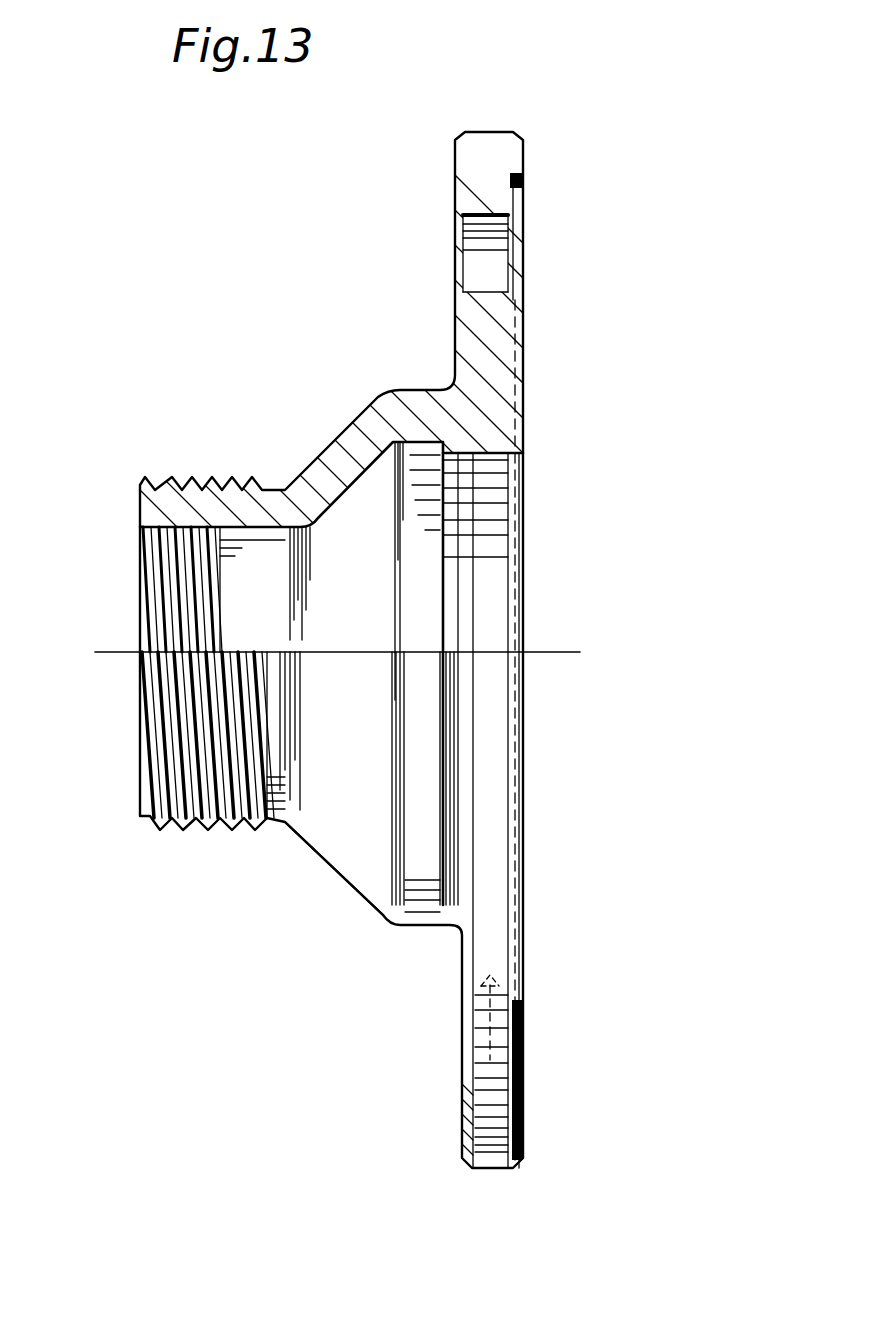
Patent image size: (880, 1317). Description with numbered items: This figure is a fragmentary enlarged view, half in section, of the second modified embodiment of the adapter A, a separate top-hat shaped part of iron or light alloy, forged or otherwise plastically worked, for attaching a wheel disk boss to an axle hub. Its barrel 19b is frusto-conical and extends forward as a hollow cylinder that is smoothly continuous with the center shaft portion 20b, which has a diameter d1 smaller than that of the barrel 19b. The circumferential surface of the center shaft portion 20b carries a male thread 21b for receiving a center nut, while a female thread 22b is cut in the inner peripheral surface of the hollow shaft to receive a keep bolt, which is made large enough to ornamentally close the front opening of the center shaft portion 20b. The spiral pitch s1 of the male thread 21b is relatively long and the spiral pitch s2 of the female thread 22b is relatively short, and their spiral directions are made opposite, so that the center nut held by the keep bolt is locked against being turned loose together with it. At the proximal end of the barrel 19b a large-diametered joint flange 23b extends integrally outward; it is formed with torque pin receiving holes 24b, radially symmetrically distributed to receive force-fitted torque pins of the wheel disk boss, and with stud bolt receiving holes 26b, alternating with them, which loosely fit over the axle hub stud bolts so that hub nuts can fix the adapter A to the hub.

The barrel 19b is at (372, 425).
The center shaft portion 20b is at (258, 522).
The male thread 21b is at (200, 836).
The female thread 22b is at (146, 578).
The joint flange 23b is at (490, 150).
The torque pin receiving hole 24b is at (490, 292).
The stud bolt receiving hole 26b is at (463, 999).
The adapter A is at (342, 878).
The diameter d1 is at (382, 820).
The spiral pitch s1 is at (212, 476).
The spiral pitch s2 is at (194, 515).